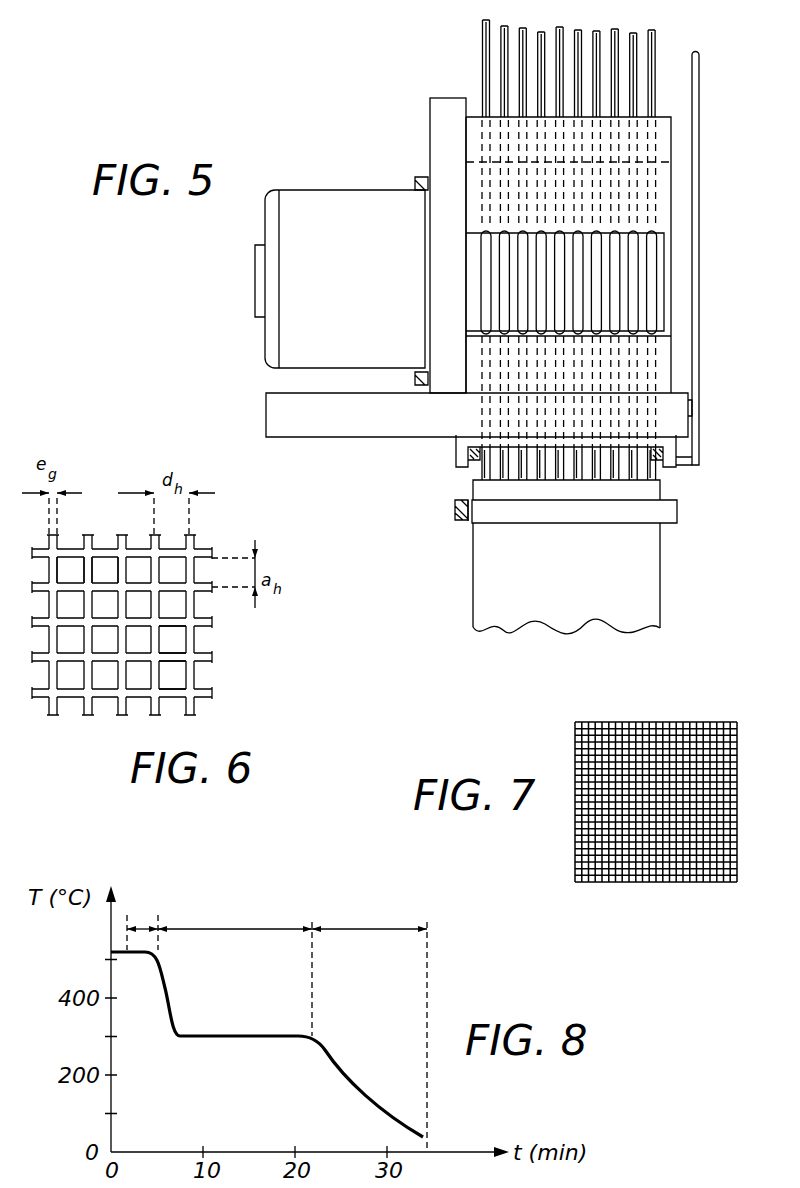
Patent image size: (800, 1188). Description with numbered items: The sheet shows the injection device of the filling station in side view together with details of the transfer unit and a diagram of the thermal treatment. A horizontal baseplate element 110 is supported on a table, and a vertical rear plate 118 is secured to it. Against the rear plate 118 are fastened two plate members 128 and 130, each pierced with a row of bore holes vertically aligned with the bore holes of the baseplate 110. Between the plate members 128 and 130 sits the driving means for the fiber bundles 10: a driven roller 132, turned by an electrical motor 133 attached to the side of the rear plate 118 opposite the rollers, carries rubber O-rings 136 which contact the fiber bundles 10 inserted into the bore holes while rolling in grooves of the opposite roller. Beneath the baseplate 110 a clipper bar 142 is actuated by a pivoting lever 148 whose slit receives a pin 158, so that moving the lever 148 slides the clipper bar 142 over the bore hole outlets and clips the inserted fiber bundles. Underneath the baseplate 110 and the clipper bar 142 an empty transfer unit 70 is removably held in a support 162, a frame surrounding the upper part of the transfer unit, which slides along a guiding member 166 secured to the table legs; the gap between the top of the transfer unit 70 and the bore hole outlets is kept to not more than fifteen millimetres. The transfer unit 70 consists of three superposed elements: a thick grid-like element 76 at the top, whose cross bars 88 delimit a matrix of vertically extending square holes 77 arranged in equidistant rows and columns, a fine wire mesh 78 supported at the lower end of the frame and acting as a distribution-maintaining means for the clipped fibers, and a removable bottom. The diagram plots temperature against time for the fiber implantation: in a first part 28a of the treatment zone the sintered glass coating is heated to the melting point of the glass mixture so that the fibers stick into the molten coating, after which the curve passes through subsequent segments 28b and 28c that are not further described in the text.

In FIG. 5, the fiber bundles 10 is at (521, 72).
In FIG. 5, the vertical rear plate 118 is at (440, 132).
In FIG. 5, the electrical motor 133 is at (308, 200).
In FIG. 5, the plate member 130 is at (670, 133).
In FIG. 5, the lever 148 is at (699, 190).
In FIG. 5, the driven roller 132 is at (660, 252).
In FIG. 5, the rubber O-rings 136 is at (632, 298).
In FIG. 5, the plate member 128 is at (667, 362).
In FIG. 5, the horizontal baseplate element 110 is at (398, 432).
In FIG. 5, the pin 158 is at (700, 453).
In FIG. 5, the clipper bar 142 is at (672, 467).
In FIG. 5, the transfer unit 70 is at (680, 578).
In FIG. 5, the guiding member 166 is at (455, 512).
In FIG. 5, the support 162 is at (462, 522).
In FIG. 6, the grid-like element 76 is at (228, 637).
In FIG. 6, the cross bars 88 is at (173, 688).
In FIG. 6, the square holes 77 is at (108, 677).
In FIG. 7, the fine mesh 78 is at (660, 850).
In FIG. 8, the first part of the treatment zone 28a is at (146, 924).
In FIG. 8, the holding phase 28b is at (235, 967).
In FIG. 8, the second cooling phase 28c is at (369, 1024).